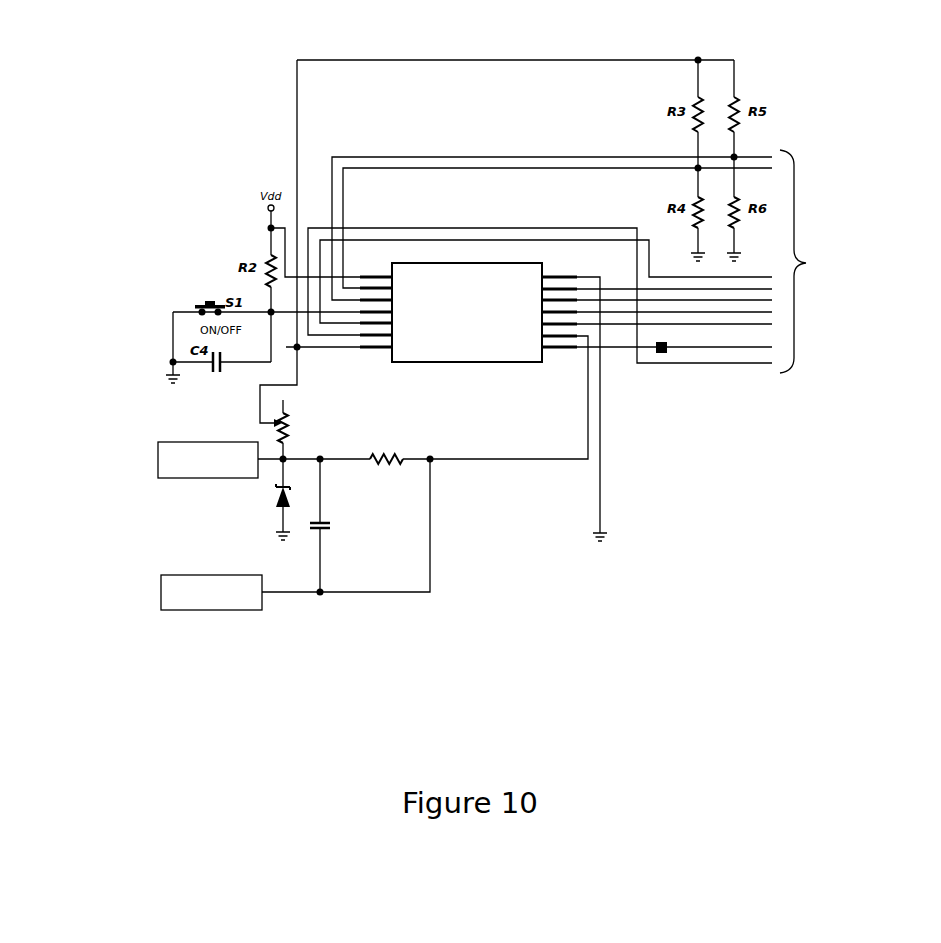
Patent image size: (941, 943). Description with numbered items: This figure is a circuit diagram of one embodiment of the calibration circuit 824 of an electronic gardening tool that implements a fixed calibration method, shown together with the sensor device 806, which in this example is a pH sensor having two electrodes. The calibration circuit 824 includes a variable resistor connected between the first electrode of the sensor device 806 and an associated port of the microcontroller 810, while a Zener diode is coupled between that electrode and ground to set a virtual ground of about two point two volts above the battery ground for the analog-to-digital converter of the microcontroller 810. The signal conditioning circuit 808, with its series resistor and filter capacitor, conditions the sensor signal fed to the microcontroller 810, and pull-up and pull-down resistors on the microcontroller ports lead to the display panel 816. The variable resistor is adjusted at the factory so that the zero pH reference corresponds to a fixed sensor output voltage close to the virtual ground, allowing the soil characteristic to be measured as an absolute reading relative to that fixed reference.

The microcontroller 810 is at (463, 263).
The signal conditioning circuit 808 is at (424, 445).
The calibration circuit 824 is at (238, 412).
The sensor device 806 is at (148, 435).
The display panel 816 is at (895, 280).